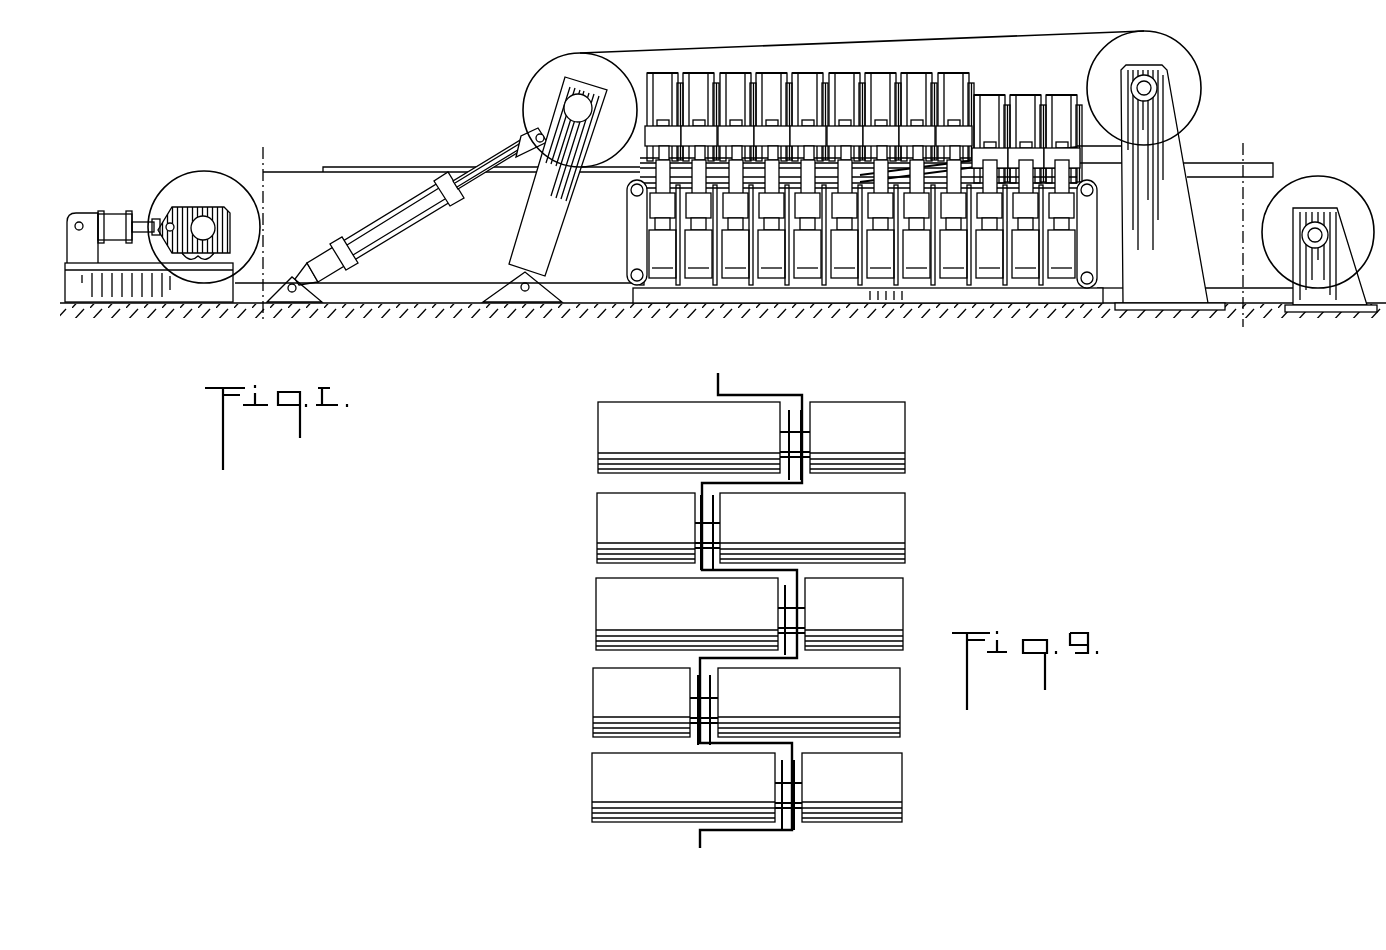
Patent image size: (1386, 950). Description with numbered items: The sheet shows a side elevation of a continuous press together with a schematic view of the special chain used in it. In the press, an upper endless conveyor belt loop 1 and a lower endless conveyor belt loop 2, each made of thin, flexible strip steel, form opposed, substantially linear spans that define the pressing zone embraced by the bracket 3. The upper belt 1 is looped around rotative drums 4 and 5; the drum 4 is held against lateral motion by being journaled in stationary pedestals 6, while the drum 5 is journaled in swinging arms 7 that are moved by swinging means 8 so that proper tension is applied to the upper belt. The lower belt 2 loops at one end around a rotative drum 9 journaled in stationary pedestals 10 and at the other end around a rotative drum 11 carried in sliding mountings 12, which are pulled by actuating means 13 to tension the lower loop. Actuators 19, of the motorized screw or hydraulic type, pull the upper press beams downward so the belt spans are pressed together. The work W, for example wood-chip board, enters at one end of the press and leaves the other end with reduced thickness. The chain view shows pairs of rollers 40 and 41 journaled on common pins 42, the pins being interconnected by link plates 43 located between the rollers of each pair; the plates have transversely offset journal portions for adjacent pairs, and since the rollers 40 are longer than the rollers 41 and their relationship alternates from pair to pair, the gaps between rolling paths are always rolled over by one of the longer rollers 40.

In FIG. 1, the upper endless conveyor belt loop 1 is at (918, 42).
In FIG. 1, the lower endless conveyor belt loop 2 is at (410, 283).
In FIG. 1, the bracket 3 is at (1100, 322).
In FIG. 1, the rotative drum 4 is at (1175, 57).
In FIG. 1, the rotative drum 5 is at (562, 63).
In FIG. 1, the stationary pedestals 6 is at (1163, 258).
In FIG. 1, the swinging arms 7 is at (555, 208).
In FIG. 1, the swinging means 8 is at (405, 213).
In FIG. 1, the rotative drum 9 is at (1338, 190).
In FIG. 1, the stationary pedestals 10 is at (1328, 263).
In FIG. 1, the rotative drum 11 is at (202, 178).
In FIG. 1, the sliding mountings 12 is at (187, 267).
In FIG. 1, the actuating means 13 is at (117, 218).
In FIG. 1, the actuators 19 is at (640, 193).
In FIG. 1, the work W is at (1267, 163).
In FIG. 9, the rollers 40 is at (592, 795).
In FIG. 9, the rollers 41 is at (887, 792).
In FIG. 9, the common pins 42 is at (800, 798).
In FIG. 9, the link plates 43 is at (745, 395).